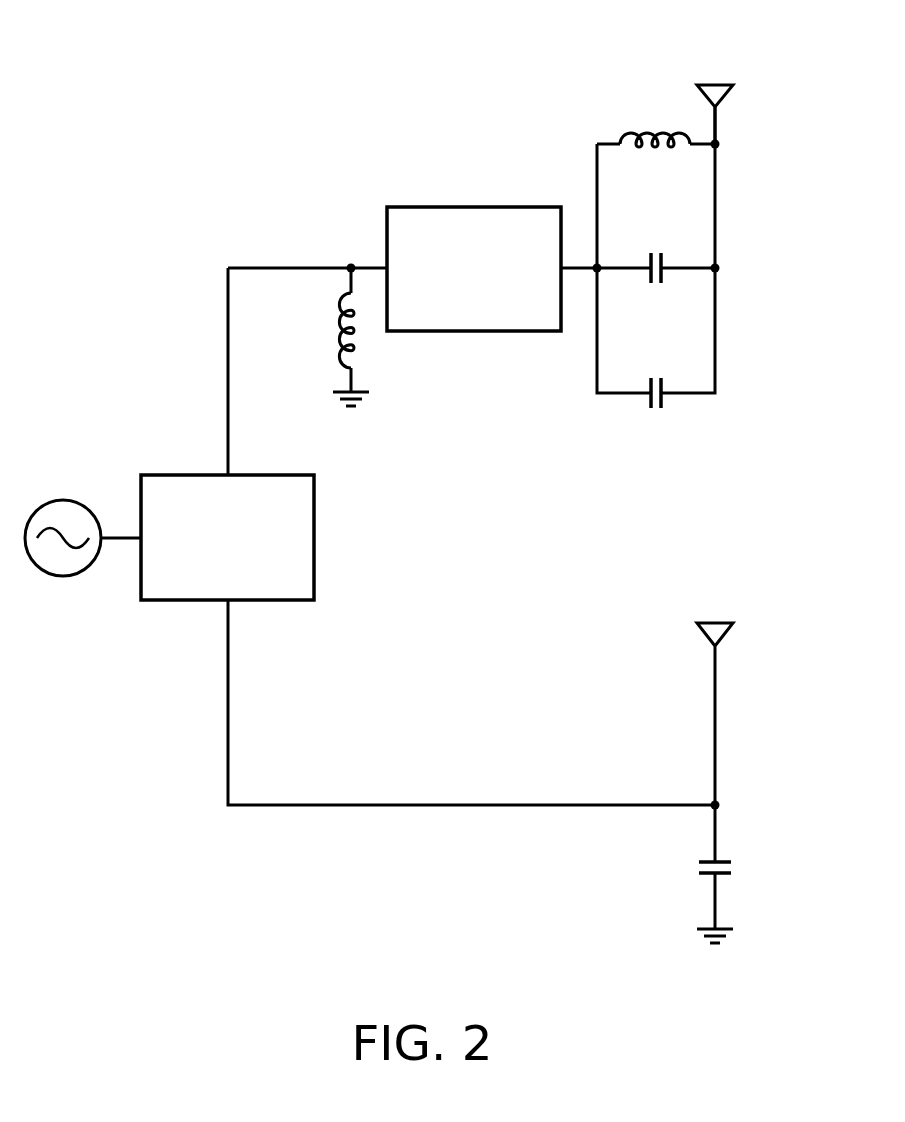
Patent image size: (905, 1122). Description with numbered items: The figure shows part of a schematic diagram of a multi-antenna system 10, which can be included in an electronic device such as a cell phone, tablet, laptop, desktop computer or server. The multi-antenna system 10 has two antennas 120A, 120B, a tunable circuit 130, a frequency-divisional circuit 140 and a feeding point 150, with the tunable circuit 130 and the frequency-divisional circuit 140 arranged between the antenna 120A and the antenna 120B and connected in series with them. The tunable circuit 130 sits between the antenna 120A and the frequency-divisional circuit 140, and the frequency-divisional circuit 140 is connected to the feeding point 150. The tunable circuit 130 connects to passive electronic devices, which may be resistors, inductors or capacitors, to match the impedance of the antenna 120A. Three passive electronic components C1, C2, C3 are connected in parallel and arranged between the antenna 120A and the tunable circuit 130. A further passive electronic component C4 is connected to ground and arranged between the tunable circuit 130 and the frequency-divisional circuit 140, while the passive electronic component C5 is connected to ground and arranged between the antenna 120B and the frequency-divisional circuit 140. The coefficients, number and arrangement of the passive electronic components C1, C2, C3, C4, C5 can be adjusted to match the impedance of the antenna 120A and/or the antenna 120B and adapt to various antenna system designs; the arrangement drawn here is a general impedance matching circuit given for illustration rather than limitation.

The multi-antenna system 10 is at (158, 84).
The antenna 120A is at (712, 83).
The antenna 120B is at (712, 620).
The tunable circuit 130 is at (446, 286).
The frequency-divisional circuit 140 is at (200, 555).
The feeding point 150 is at (60, 495).
The passive electronic component C1 is at (651, 130).
The passive electronic component C2 is at (651, 253).
The passive electronic component C3 is at (651, 378).
The passive electronic component C4 is at (337, 336).
The passive electronic component C5 is at (733, 868).